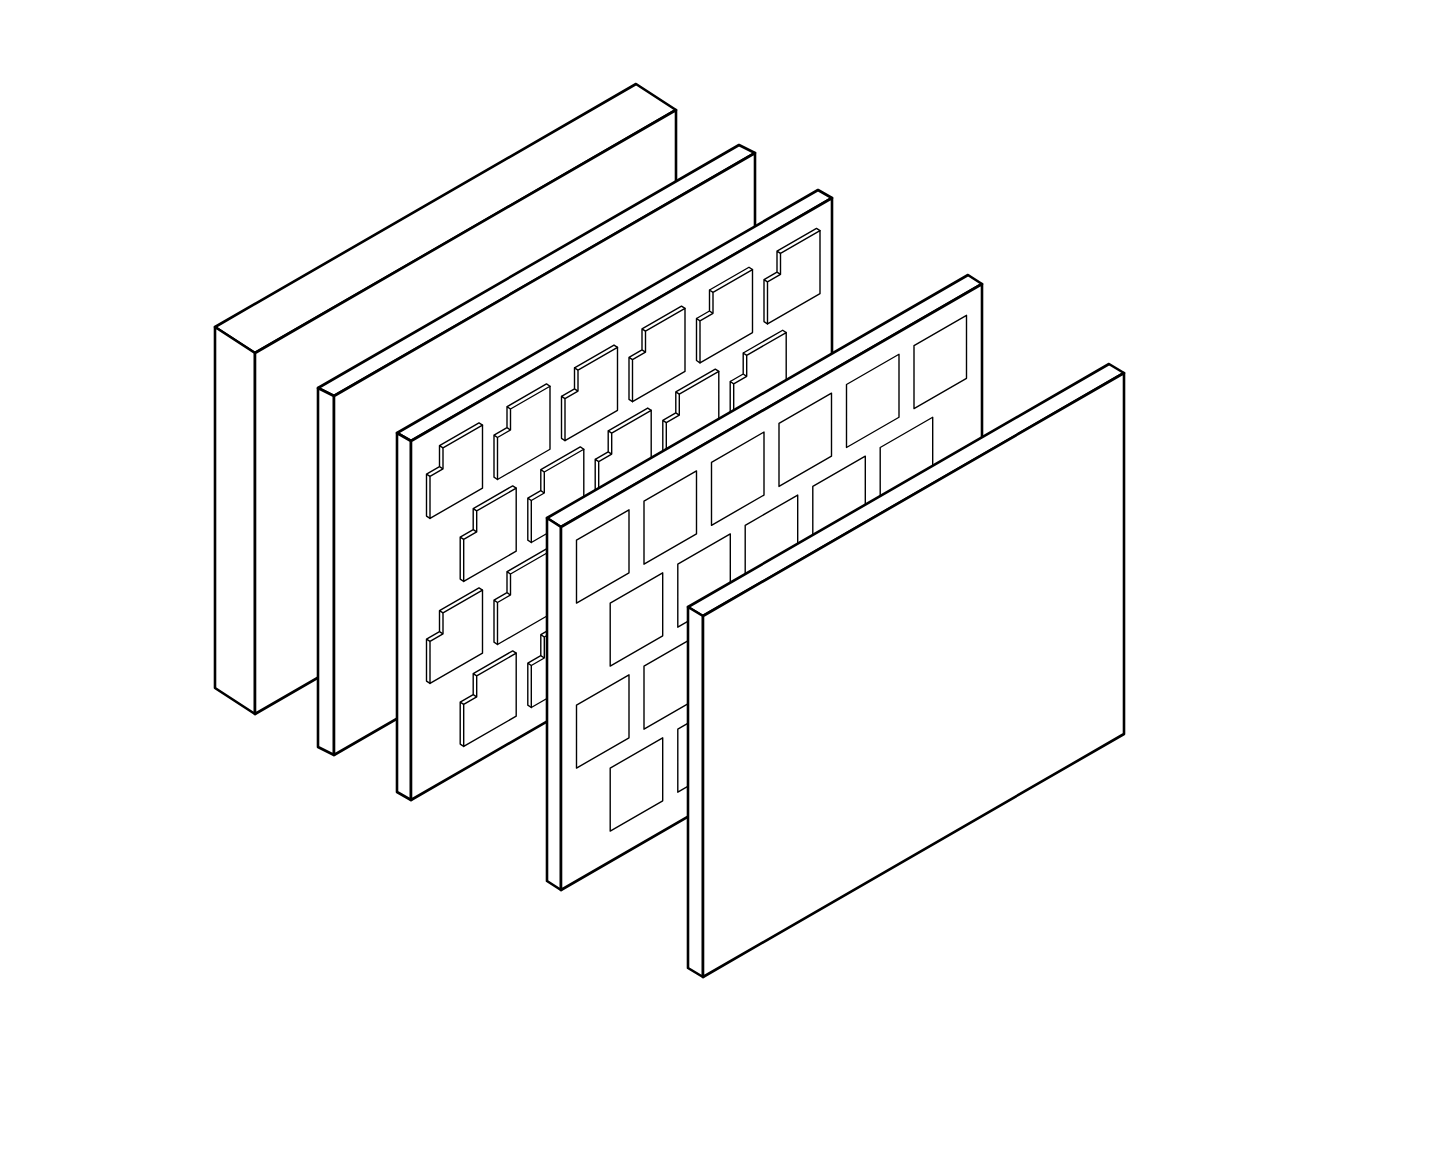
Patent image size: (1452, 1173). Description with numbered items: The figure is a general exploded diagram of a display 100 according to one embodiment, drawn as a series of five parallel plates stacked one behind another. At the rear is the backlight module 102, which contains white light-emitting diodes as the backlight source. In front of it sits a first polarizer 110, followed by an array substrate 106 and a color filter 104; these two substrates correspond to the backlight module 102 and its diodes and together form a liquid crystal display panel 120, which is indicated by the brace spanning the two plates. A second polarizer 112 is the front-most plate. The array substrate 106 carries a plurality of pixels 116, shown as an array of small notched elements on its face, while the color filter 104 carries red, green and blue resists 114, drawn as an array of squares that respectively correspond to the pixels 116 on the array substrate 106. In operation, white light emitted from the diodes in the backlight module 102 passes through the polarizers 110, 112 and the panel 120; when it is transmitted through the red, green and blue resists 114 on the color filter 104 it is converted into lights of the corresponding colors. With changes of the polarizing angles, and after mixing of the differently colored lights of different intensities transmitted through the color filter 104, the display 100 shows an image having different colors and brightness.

The display 100 is at (777, 527).
The backlight module 102 is at (677, 130).
The color filter 104 is at (576, 611).
The array substrate 106 is at (529, 485).
The polarizer 110 is at (755, 177).
The polarizer 112 is at (1123, 427).
The red, green and blue resists 114 is at (572, 575).
The pixels 116 is at (428, 457).
The liquid crystal display (LCD) panel 120 is at (676, 573).